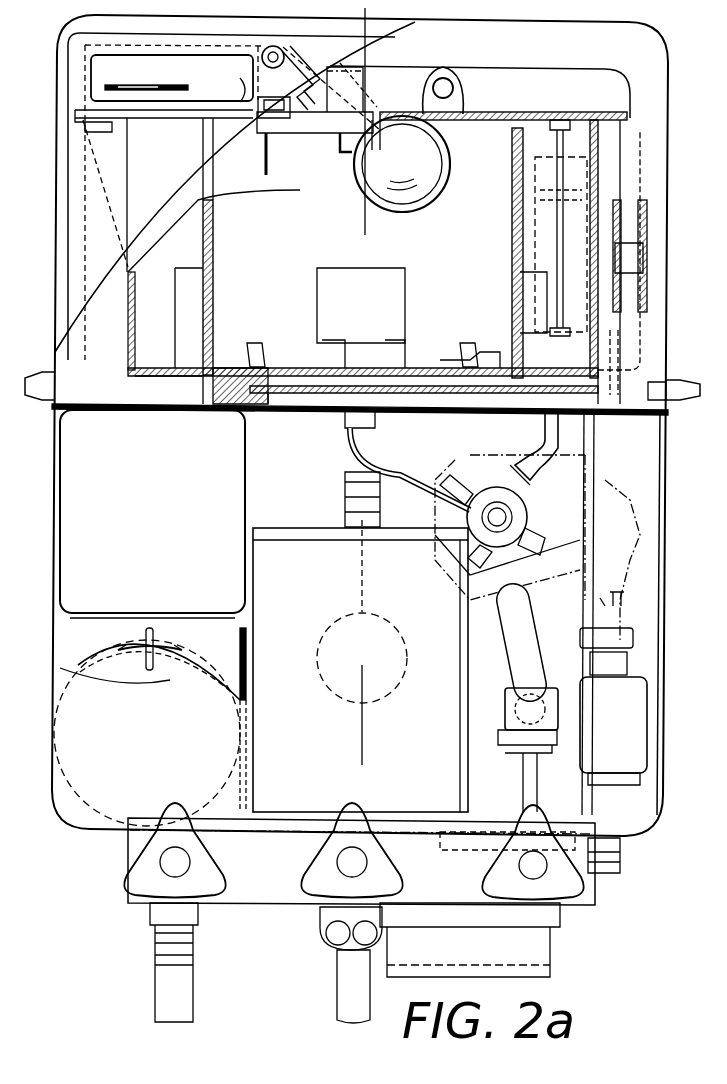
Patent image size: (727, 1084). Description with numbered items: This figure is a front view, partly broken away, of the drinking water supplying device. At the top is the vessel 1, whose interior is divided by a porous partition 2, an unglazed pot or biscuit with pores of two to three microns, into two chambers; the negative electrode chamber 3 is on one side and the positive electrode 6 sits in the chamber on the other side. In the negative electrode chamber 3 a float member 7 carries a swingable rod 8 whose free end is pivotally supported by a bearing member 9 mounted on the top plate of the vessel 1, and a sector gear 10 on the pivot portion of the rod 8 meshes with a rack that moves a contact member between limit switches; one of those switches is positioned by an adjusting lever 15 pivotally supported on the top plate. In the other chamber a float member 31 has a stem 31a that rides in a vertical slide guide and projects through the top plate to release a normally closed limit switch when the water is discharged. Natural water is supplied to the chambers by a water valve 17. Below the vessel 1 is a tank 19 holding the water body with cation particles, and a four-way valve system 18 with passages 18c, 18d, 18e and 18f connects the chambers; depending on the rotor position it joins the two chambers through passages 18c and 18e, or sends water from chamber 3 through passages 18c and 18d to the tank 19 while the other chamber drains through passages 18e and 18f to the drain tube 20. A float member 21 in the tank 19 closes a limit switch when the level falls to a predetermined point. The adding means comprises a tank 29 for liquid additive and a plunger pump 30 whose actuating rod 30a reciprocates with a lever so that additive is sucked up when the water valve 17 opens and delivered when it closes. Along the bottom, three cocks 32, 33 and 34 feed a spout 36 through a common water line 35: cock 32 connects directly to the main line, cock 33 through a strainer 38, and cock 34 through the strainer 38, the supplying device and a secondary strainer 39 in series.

The vessel 1 is at (605, 327).
The porous partition 2 is at (512, 270).
The negative electrode chamber 3 is at (275, 272).
The positive electrode 6 is at (178, 328).
The float member 7 is at (428, 195).
The swingable rod 8 is at (330, 99).
The bearing member 9 is at (272, 118).
The sector gear 10 is at (320, 88).
The adjusting lever 15 is at (150, 72).
The water valve 17 is at (539, 719).
The valve system 18 is at (492, 473).
The passage 18c is at (455, 488).
The passage 18d is at (483, 569).
The passage 18e is at (525, 491).
The passage 18f is at (535, 551).
The tank 19 is at (294, 548).
The drain tube 20 is at (622, 858).
The float member 21 is at (386, 699).
The tank 29 is at (609, 716).
The plunger pump 30 is at (614, 674).
The actuating rod 30a is at (606, 620).
The float member 31 is at (527, 349).
The stem 31a is at (567, 232).
The cock 32 is at (207, 870).
The cock 33 is at (385, 870).
The cock 34 is at (557, 870).
The common water line 35 is at (245, 905).
The spout 36 is at (330, 950).
The strainer 38 is at (223, 650).
The secondary strainer 39 is at (548, 952).